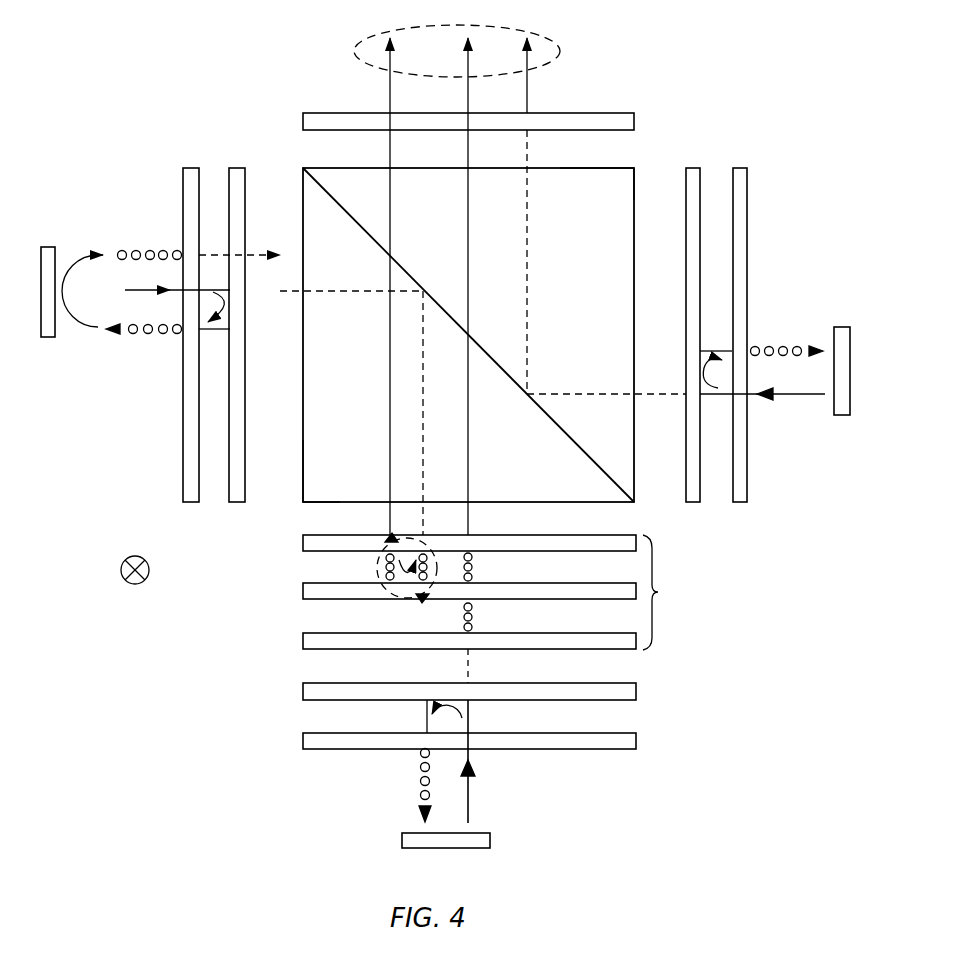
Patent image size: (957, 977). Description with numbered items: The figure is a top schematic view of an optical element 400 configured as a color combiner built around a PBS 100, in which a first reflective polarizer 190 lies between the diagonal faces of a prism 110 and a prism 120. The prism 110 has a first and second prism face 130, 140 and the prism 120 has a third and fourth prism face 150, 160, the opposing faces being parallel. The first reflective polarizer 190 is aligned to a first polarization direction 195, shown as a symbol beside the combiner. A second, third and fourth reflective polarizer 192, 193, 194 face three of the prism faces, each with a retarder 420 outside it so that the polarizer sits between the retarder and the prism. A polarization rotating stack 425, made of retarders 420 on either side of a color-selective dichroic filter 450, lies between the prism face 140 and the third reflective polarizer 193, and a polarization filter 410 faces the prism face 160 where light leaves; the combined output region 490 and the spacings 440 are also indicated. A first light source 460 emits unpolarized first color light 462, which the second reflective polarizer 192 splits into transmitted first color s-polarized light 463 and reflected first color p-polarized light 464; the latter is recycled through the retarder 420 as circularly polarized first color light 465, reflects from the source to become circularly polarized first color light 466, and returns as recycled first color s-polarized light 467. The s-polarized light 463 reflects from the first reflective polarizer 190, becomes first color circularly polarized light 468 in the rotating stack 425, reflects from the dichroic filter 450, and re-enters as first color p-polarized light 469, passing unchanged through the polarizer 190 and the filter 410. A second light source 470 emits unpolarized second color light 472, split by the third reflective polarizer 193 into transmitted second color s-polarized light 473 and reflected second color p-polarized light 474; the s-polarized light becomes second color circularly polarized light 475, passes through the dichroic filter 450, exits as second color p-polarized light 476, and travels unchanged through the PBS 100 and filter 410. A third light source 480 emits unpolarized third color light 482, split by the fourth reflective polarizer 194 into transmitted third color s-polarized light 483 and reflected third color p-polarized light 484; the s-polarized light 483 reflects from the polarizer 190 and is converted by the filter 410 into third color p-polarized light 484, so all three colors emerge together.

The PBS 100 is at (298, 166).
The prism 110 is at (302, 502).
The prism 120 is at (635, 167).
The first prism face 130 is at (302, 490).
The second prism face 140 is at (303, 502).
The third prism face 150 is at (636, 176).
The fourth prism face 160 is at (622, 166).
The first reflective polarizer 190 is at (328, 180).
The second reflective polarizer 192 is at (236, 167).
The third reflective polarizer 193 is at (302, 690).
The fourth reflective polarizer 194 is at (693, 503).
The first polarization direction 195 is at (135, 585).
The optical element 400 is at (188, 48).
The polarization filter 410 is at (634, 128).
The retarder 420 is at (187, 167).
The polarization rotating stack 425 is at (680, 592).
The gap 440 is at (627, 133).
The color-selective dichroic filter 450 is at (302, 591).
The first light source 460 is at (45, 246).
The unpolarized first color light 462 is at (135, 285).
The transmitted first color s-polarized light 463 is at (280, 291).
The reflected first color p-polarized light 464 is at (212, 330).
The circularly polarized first color light 465 is at (150, 340).
The circularly polarized first color light 466 is at (149, 249).
The recycled first color s-polarized light 467 is at (210, 255).
The first color circularly polarized light 468 is at (375, 570).
The first color p-polarized light 469 is at (390, 406).
The second light source 470 is at (490, 841).
The unpolarized second color light 472 is at (468, 790).
The transmitted second color s-polarized light 473 is at (468, 672).
The reflected second color p-polarized light 474 is at (427, 716).
The second color circularly polarized light 475 is at (473, 618).
The second color p-polarized light 476 is at (468, 458).
The third light source 480 is at (841, 416).
The unpolarized third color light 482 is at (800, 396).
The transmitted third color s-polarized light 483 is at (658, 396).
The third color p-polarized light 484 is at (527, 90).
The output light region 490 is at (548, 40).